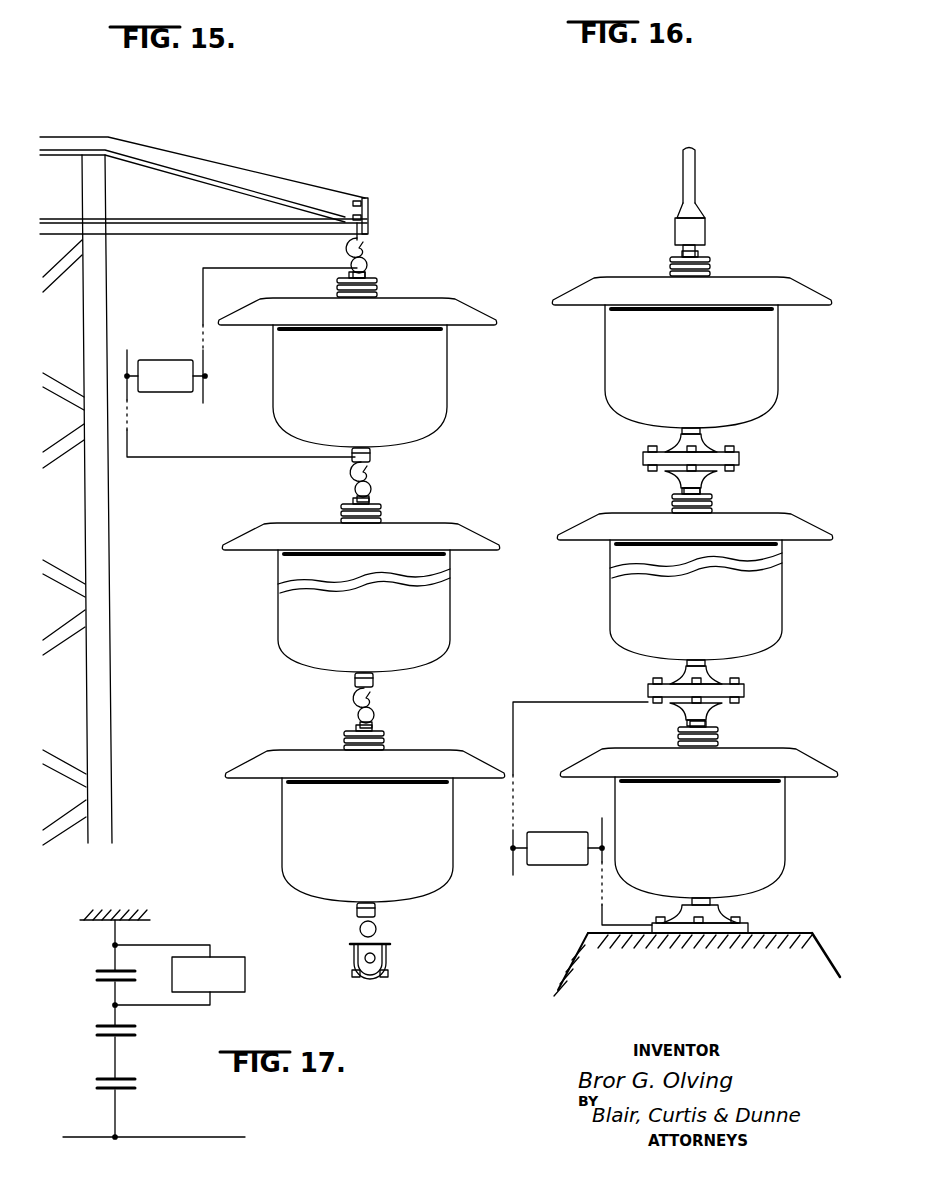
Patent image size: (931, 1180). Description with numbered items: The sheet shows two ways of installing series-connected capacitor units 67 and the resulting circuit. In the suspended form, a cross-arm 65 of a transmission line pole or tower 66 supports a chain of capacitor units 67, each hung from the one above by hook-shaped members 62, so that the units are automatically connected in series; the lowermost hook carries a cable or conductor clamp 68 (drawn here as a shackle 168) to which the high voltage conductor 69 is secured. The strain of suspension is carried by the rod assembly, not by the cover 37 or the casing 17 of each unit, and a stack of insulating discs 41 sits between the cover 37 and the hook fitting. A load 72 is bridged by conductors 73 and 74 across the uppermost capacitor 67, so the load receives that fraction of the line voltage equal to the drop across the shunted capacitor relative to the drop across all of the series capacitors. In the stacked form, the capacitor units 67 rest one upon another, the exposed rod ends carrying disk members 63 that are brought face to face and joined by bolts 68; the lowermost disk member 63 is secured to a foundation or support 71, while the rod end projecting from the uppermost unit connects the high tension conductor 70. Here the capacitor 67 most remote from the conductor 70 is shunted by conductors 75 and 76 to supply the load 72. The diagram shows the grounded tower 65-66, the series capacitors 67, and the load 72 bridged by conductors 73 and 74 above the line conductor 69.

In FIG. 15, the casing 17 is at (448, 372).
In FIG. 16, the casing 17 is at (605, 355).
In FIG. 15, the cover 37 is at (439, 303).
In FIG. 16, the cover 37 is at (763, 283).
In FIG. 15, the stacked insulating discs 41 is at (378, 291).
In FIG. 16, the stacked insulating discs 41 is at (672, 268).
In FIG. 15, the hook-shaped member 62 is at (370, 250).
In FIG. 16, the disk member 63 is at (714, 448).
In FIG. 15, the cross-arm 65 is at (172, 160).
In FIG. 17, the cross-arm 65 is at (96, 914).
In FIG. 15, the tower 66 is at (99, 566).
In FIG. 17, the tower 66 is at (102, 908).
In FIG. 15, the capacitor unit 67 is at (358, 602).
In FIG. 16, the capacitor unit 67 is at (689, 591).
In FIG. 17, the capacitor unit 67 is at (95, 1028).
In FIG. 16, the conductor clamp 68 is at (658, 450).
In FIG. 15, the high voltage conductor 69 is at (370, 978).
In FIG. 17, the high voltage conductor 69 is at (182, 1137).
In FIG. 16, the high tension conductor 70 is at (683, 161).
In FIG. 16, the foundation 71 is at (790, 933).
In FIG. 15, the load 72 is at (162, 359).
In FIG. 16, the load 72 is at (556, 832).
In FIG. 17, the load 72 is at (228, 957).
In FIG. 15, the conductor 73 is at (258, 268).
In FIG. 17, the conductor 73 is at (174, 945).
In FIG. 15, the conductor 74 is at (213, 459).
In FIG. 17, the conductor 74 is at (164, 1008).
In FIG. 16, the conductor 75 is at (566, 700).
In FIG. 16, the conductor 76 is at (600, 916).
In FIG. 15, the shackle 168 is at (352, 950).